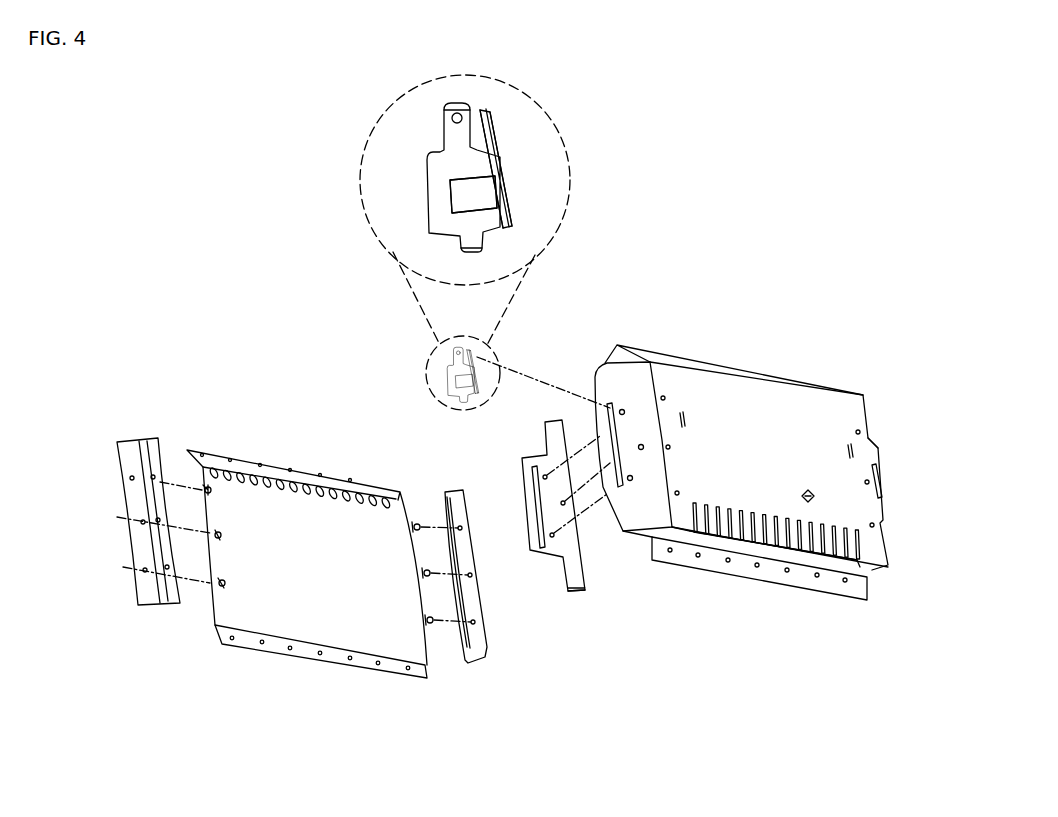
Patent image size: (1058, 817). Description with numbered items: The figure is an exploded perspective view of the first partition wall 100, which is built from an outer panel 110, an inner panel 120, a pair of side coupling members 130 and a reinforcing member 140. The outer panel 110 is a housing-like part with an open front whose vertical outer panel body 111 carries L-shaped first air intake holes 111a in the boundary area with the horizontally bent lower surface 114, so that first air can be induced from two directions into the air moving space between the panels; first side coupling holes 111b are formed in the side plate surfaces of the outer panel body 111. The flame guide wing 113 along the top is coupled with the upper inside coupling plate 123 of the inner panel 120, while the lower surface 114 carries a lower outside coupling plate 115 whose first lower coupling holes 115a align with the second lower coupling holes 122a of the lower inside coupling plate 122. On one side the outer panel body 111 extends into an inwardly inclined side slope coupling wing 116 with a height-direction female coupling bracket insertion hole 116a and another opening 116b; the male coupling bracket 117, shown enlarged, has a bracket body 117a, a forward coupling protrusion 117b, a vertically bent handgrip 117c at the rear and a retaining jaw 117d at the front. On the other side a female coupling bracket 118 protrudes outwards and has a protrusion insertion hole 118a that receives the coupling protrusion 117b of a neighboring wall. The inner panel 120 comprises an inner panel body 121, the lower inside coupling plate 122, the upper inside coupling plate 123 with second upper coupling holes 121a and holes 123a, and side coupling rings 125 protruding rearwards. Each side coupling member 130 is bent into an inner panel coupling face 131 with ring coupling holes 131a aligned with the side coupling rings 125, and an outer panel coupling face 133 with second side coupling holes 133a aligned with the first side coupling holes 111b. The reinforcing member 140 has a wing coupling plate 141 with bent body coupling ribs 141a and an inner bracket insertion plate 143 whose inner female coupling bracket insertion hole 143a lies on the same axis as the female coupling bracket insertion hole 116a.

The first partition wall 100 is at (263, 274).
The outer panel 110 is at (818, 332).
The outer panel body 111 is at (820, 408).
The first air intake holes 111a is at (818, 567).
The first side coupling holes 111b is at (664, 397).
The flame guide wing 113 is at (747, 367).
The lower surface 114 is at (765, 580).
The lower outside coupling plate 115 is at (732, 568).
The first lower coupling holes 115a is at (788, 572).
The side slope coupling wing 116 is at (633, 378).
The female coupling bracket insertion hole 116a is at (611, 402).
The side holes 116b is at (632, 483).
The male coupling bracket 117 is at (510, 150).
The bracket body 117a is at (458, 134).
The coupling protrusion 117b is at (432, 190).
The handgrip 117c is at (508, 188).
The retaining jaw 117d is at (467, 243).
The female coupling bracket 118 is at (878, 450).
The protrusion insertion hole 118a is at (883, 480).
The inner panel 120 is at (312, 421).
The inner panel body 121 is at (277, 625).
The second upper coupling holes 121a is at (342, 490).
The lower inside coupling plate 122 is at (308, 652).
The second lower coupling holes 122a is at (350, 660).
The upper inside coupling plate 123 is at (275, 463).
The mounting holes 123a is at (232, 458).
The side coupling rings 125 is at (215, 617).
The side coupling members 130 is at (112, 424).
The inner panel coupling face 131 is at (130, 458).
The ring coupling holes 131a is at (130, 479).
The outer panel coupling face 133 is at (150, 443).
The second side coupling holes 133a is at (156, 475).
The reinforcing member 140 is at (598, 613).
The wing coupling plate 141 is at (552, 435).
The body coupling ribs 141a is at (579, 596).
The inner bracket insertion plate 143 is at (525, 462).
The inner female coupling bracket insertion hole 143a is at (545, 538).